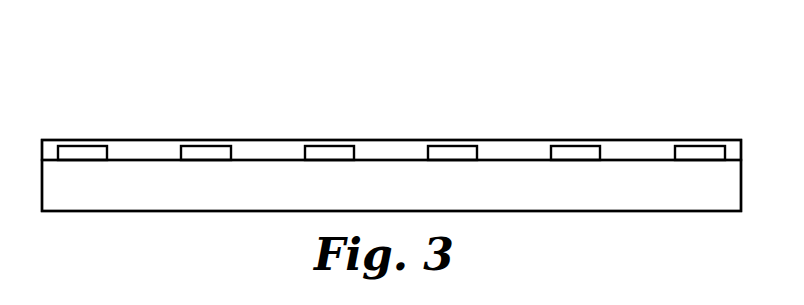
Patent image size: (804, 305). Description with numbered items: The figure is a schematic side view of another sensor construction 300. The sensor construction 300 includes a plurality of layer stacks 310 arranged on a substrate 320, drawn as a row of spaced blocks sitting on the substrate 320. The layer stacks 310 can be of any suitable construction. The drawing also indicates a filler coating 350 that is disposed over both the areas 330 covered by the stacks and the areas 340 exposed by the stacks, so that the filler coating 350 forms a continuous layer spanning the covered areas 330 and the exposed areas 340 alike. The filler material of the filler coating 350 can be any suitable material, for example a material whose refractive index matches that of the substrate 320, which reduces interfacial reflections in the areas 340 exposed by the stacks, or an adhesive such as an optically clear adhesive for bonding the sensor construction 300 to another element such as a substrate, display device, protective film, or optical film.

The sensor construction 300 is at (530, 72).
The layer stacks 310 is at (692, 155).
The substrate 320 is at (692, 190).
The areas covered by the stacks 330 is at (181, 134).
The areas exposed by the stacks 340 is at (231, 134).
The filler coating 350 is at (621, 148).